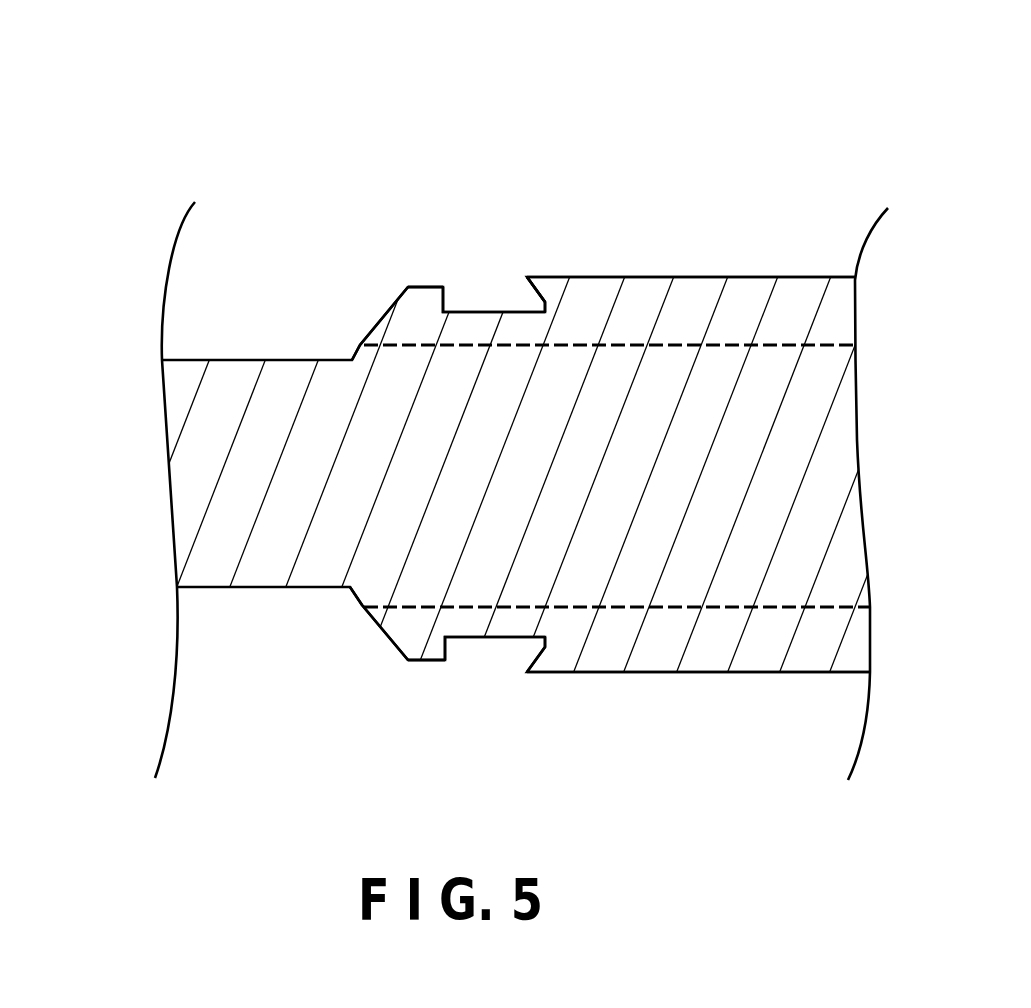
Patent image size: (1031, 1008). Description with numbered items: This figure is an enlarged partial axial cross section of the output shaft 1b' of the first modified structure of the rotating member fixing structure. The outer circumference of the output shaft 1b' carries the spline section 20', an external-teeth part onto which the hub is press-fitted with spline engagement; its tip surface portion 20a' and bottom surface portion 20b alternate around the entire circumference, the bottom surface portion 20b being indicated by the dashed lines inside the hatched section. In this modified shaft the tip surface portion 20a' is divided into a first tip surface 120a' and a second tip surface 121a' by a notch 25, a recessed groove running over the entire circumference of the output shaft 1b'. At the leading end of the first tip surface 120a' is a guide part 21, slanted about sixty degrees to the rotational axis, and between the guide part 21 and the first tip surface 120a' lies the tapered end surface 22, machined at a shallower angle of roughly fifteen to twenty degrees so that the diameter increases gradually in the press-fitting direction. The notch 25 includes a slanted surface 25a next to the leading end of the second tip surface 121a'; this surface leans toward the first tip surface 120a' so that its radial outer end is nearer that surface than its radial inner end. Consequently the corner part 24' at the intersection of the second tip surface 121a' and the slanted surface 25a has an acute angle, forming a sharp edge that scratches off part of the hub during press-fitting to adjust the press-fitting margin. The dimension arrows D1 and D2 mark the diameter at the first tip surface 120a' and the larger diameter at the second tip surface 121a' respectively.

The spline section 20' is at (557, 479).
The output shaft 1b' is at (956, 231).
The tip surface portion 20a' is at (536, 335).
The first tip surface 120a' is at (446, 431).
The second tip surface 121a' is at (698, 423).
The guide part 21 is at (358, 340).
The tapered end surface 22 is at (390, 305).
The corner part 24' is at (515, 479).
The notch 25 is at (488, 312).
The slanted surface 25a is at (527, 297).
The bottom surface portion 20b is at (802, 345).
The first diameter D1 is at (412, 287).
The second diameter D2 is at (605, 277).